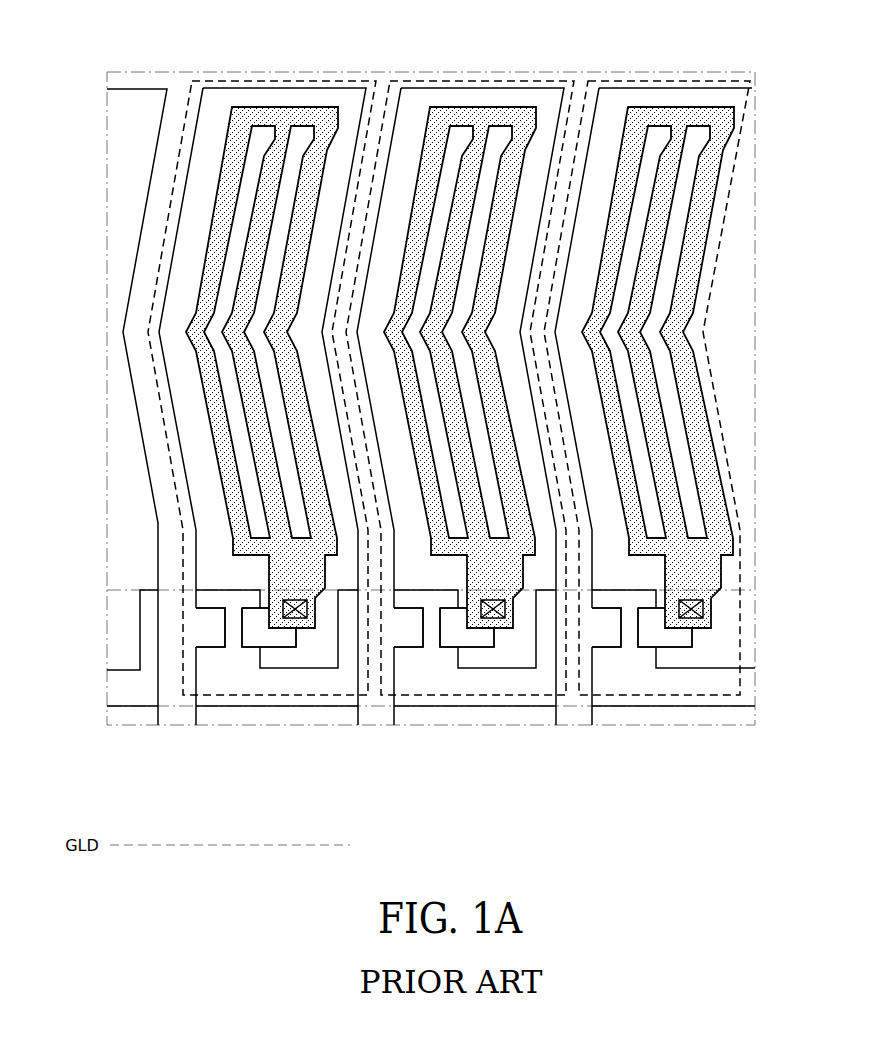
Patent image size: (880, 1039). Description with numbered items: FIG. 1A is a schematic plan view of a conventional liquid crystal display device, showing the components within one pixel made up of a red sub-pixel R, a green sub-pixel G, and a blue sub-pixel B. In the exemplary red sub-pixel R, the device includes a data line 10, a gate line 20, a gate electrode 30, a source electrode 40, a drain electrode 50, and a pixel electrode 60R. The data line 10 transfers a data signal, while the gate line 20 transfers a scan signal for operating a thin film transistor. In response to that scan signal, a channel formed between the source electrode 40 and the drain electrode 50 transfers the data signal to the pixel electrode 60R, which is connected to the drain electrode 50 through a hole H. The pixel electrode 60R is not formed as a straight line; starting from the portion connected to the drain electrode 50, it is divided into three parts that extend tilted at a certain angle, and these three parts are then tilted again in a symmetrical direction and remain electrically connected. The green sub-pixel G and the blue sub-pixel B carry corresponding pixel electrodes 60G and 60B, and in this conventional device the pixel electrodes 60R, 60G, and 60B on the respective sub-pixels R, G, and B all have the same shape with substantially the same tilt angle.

The data line 10 is at (163, 498).
The gate line 20 is at (276, 704).
The gate electrode 30 is at (147, 625).
The source electrode 40 is at (213, 633).
The drain electrode 50 is at (252, 632).
The pixel electrode 60R is at (229, 150).
The pixel electrode 60G is at (427, 150).
The pixel electrode 60B is at (625, 150).
The hole H is at (300, 622).
The red sub-pixel R is at (335, 81).
The green sub-pixel G is at (523, 81).
The blue sub-pixel B is at (732, 81).